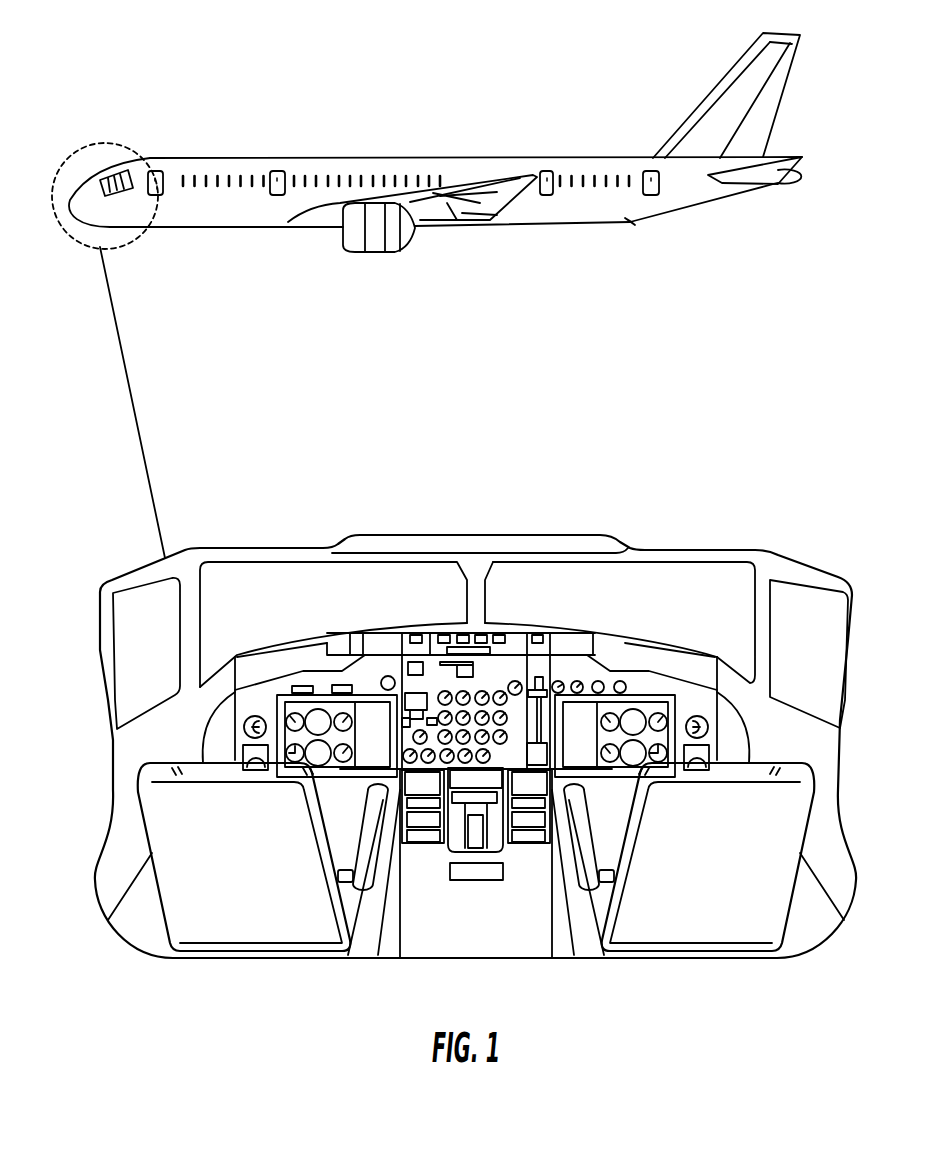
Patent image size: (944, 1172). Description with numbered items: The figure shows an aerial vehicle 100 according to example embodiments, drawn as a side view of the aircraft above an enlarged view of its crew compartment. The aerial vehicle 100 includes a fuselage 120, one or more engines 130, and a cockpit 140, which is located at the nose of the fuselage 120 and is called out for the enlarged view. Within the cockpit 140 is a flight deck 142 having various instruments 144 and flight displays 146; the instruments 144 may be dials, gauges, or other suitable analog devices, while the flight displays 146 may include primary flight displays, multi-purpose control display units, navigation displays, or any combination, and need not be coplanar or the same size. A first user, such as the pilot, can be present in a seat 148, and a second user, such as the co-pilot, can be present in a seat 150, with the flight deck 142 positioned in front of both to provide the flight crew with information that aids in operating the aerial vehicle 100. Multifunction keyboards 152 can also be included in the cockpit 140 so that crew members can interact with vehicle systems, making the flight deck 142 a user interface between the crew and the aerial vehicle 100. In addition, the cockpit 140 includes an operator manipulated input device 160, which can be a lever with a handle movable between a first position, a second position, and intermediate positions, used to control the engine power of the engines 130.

The aerial vehicle 100 is at (512, 118).
The fuselage 120 is at (243, 215).
The engine 130 is at (375, 240).
The cockpit 140 is at (158, 202).
The flight deck 142 is at (699, 672).
The instruments 144 is at (514, 679).
The flight displays 146 is at (372, 717).
The seat 148 is at (180, 890).
The seat 150 is at (767, 918).
The multifunction keyboards 152 is at (428, 835).
The operator manipulated input device 160 is at (490, 818).